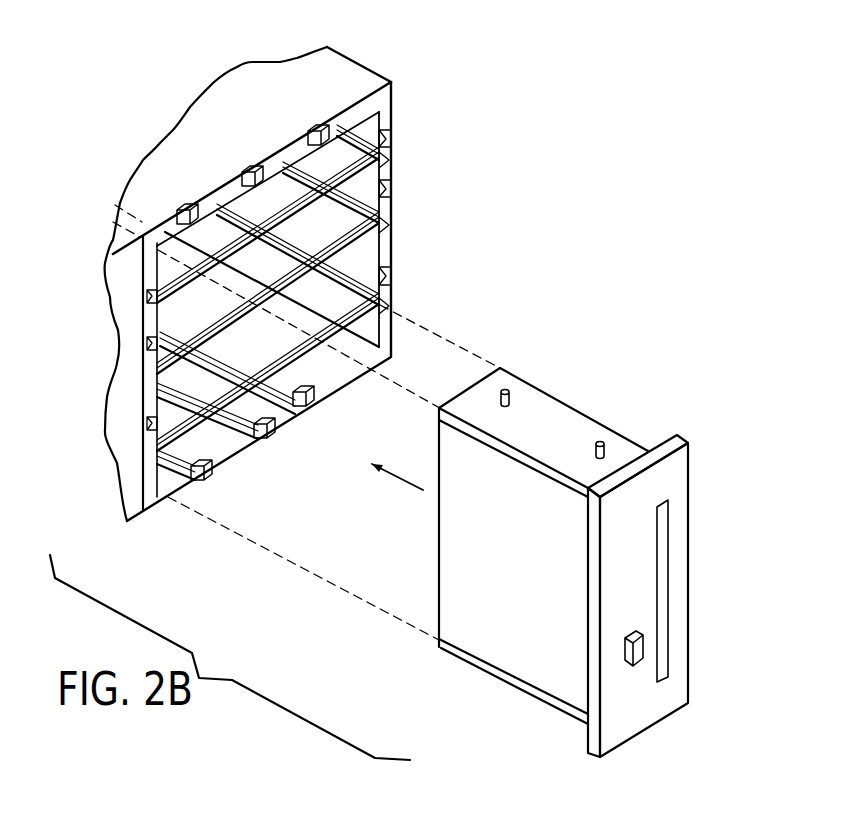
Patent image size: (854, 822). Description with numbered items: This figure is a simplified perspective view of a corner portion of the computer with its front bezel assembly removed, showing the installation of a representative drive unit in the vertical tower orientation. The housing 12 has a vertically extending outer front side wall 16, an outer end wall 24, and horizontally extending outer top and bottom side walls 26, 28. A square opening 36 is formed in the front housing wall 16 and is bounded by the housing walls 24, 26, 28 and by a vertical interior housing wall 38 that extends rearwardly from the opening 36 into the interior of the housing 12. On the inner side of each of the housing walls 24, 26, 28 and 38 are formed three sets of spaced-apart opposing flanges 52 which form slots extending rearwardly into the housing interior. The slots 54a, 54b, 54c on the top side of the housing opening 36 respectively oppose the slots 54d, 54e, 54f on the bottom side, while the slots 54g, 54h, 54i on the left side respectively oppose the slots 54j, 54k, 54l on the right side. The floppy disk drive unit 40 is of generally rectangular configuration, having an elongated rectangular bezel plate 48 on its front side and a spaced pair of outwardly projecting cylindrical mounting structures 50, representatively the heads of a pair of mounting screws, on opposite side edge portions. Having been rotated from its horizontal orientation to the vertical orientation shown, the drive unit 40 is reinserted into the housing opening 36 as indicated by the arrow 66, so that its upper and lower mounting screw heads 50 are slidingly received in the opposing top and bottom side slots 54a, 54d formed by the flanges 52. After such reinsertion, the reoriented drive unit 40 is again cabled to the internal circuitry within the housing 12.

The housing 12 is at (366, 57).
The outer front side wall 16 is at (115, 427).
The outer rear end wall 24 is at (393, 173).
The outer top side wall 26 is at (252, 77).
The outer bottom side wall 28 is at (357, 372).
The square opening 36 is at (350, 240).
The vertical interior housing wall 38 is at (137, 212).
The floppy disk drive unit 40 is at (617, 378).
The bezel plate 48 is at (672, 475).
The cylindrical mounting structures 50 is at (600, 442).
The opposing flanges 52 is at (250, 198).
The slot 54a is at (180, 209).
The slot 54b is at (248, 171).
The slot 54c is at (312, 128).
The slot 54d is at (194, 481).
The slot 54e is at (258, 440).
The slot 54f is at (308, 407).
The slot 54g is at (145, 290).
The slot 54h is at (146, 362).
The slot 54i is at (145, 447).
The slot 54j is at (393, 138).
The slot 54k is at (393, 209).
The slot 54l is at (388, 290).
The arrow 66 is at (400, 479).